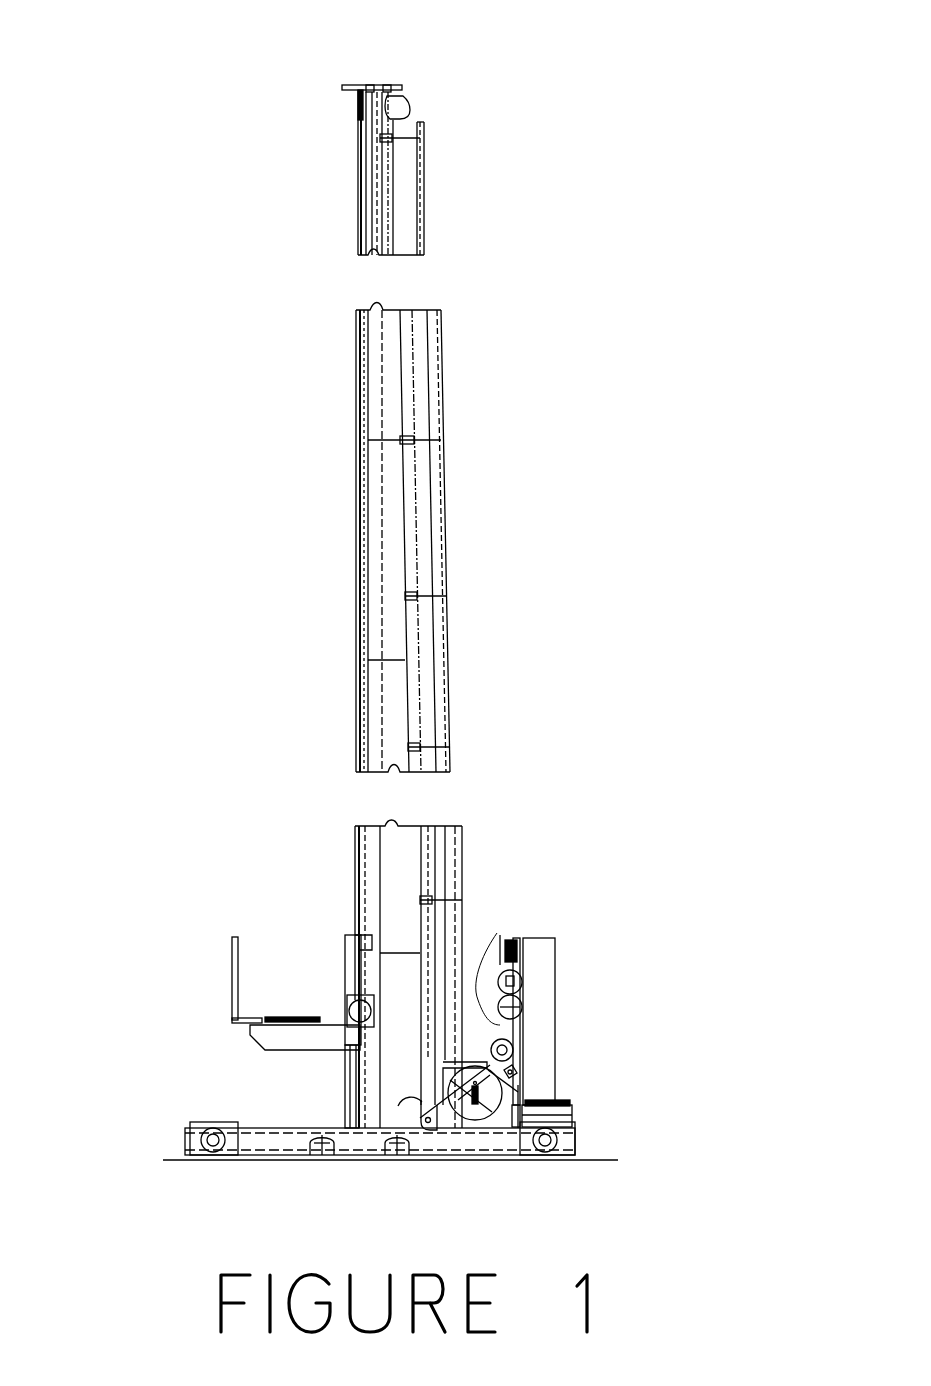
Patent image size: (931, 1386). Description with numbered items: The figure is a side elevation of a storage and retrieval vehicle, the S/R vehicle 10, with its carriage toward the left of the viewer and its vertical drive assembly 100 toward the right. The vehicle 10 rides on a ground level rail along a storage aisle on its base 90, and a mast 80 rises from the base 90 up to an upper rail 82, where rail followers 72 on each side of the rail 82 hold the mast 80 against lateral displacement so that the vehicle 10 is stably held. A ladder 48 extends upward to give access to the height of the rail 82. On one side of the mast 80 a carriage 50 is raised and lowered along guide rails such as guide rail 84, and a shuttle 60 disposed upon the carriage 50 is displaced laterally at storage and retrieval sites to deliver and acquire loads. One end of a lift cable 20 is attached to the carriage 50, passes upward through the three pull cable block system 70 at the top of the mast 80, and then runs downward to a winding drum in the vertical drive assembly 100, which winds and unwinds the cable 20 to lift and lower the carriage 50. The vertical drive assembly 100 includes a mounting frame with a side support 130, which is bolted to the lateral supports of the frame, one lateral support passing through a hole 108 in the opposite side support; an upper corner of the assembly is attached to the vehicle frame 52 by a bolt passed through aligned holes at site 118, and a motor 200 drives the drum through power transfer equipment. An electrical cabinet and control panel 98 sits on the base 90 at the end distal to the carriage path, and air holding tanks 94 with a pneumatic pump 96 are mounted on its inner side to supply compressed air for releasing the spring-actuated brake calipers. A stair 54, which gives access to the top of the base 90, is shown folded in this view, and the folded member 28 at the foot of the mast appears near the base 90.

The S/R vehicle 10 is at (168, 562).
The lift cable 20 is at (382, 154).
The mast base pivot 28 is at (440, 1118).
The ladder 48 is at (422, 165).
The carriage 50 is at (230, 983).
The frame 52 is at (520, 1092).
The stair 54 is at (575, 1118).
The shuttle 60 is at (285, 1018).
The three pull cable block system 70 is at (410, 112).
The rail followers 72 is at (364, 85).
The mast 80 is at (372, 255).
The rail 82 is at (392, 88).
The guide rail 84 is at (358, 524).
The base 90 is at (180, 1140).
The air holding tank 94 is at (505, 970).
The pneumatic pump 96 is at (505, 1005).
The electrical cabinet and control panel 98 is at (555, 992).
The vertical drive assembly 100 is at (476, 920).
The hole 108 is at (360, 1128).
The site 118 is at (518, 1065).
The side support 130 is at (495, 1115).
The motor 200 is at (515, 1040).